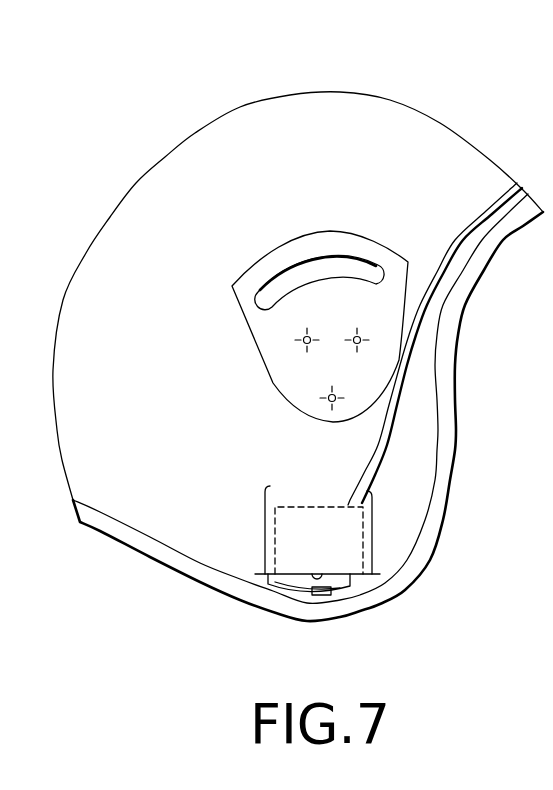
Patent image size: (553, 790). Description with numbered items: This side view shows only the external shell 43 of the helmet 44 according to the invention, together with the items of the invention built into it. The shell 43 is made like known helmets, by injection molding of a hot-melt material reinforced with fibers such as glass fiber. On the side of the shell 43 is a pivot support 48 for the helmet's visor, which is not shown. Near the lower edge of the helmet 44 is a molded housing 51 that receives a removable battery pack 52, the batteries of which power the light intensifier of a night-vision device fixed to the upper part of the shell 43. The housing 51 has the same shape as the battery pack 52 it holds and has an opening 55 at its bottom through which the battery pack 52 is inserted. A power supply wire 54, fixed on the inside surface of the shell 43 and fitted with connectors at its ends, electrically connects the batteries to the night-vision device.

The helmet 44 is at (190, 105).
The external shell 43 is at (107, 222).
The pivot support 48 is at (275, 355).
The power supply wire 54 is at (402, 393).
The molded housing 51 is at (267, 537).
The removable battery pack 52 is at (363, 588).
The opening 55 is at (316, 574).